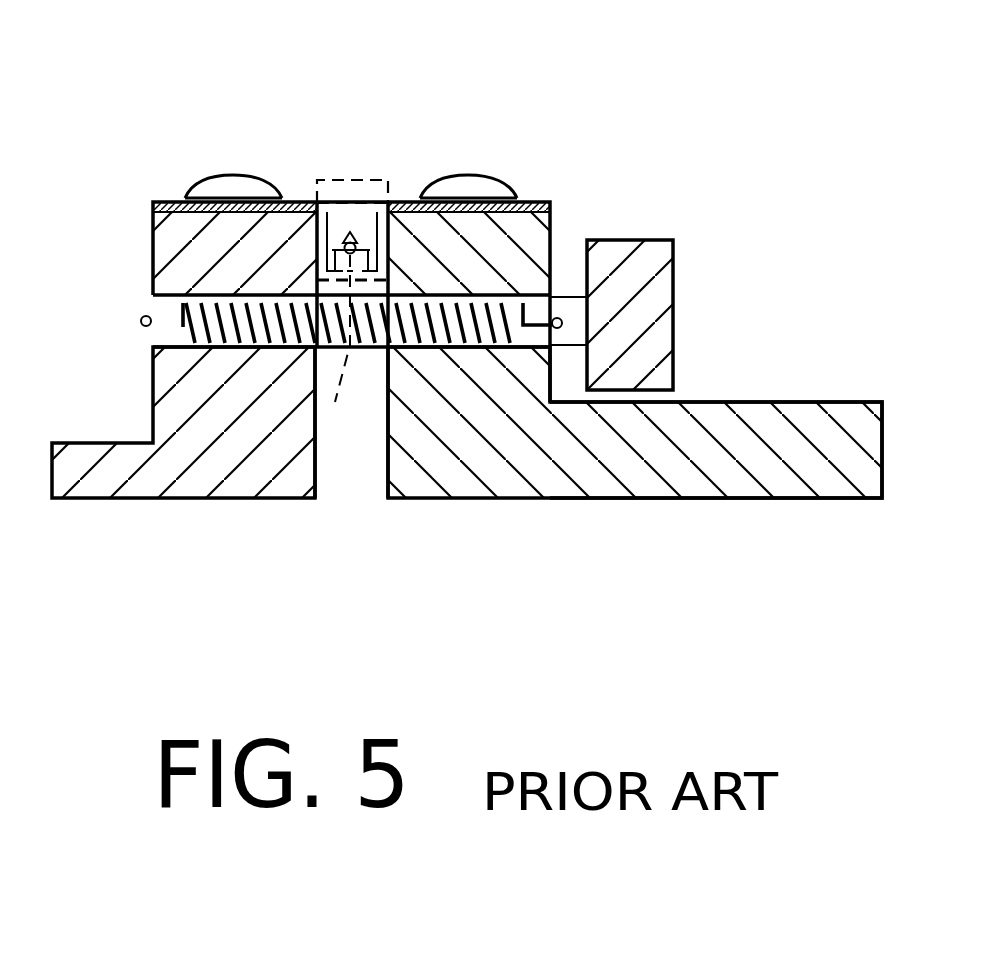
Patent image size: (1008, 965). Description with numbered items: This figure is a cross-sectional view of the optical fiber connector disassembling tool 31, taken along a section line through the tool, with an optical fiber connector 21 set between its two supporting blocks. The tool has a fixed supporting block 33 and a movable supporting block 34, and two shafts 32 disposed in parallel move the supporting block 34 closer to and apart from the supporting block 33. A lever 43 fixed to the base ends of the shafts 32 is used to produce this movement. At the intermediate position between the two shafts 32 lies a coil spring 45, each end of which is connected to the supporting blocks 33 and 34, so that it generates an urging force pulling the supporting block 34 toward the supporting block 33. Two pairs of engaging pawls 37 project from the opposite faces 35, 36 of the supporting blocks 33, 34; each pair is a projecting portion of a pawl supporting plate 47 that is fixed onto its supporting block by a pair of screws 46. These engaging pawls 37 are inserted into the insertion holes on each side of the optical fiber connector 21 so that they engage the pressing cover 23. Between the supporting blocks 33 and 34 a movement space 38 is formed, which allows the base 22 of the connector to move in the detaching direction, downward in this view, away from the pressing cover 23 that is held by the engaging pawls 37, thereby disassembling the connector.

The optical fiber connector 21 is at (352, 175).
The base 22 is at (348, 354).
The pressing cover 23 is at (379, 173).
The optical fiber connector disassembling tool 31 is at (556, 205).
The shafts 32 is at (566, 306).
The supporting block 33 is at (763, 422).
The supporting block 34 is at (213, 481).
The opposite face 35 is at (386, 470).
The opposite face 36 is at (322, 493).
The engaging pawls 37 is at (326, 180).
The movement space 38 is at (350, 463).
The lever 43 is at (674, 258).
The coil spring 45 is at (183, 328).
The screws 46 is at (479, 193).
The pawl supporting plate 47 is at (531, 203).